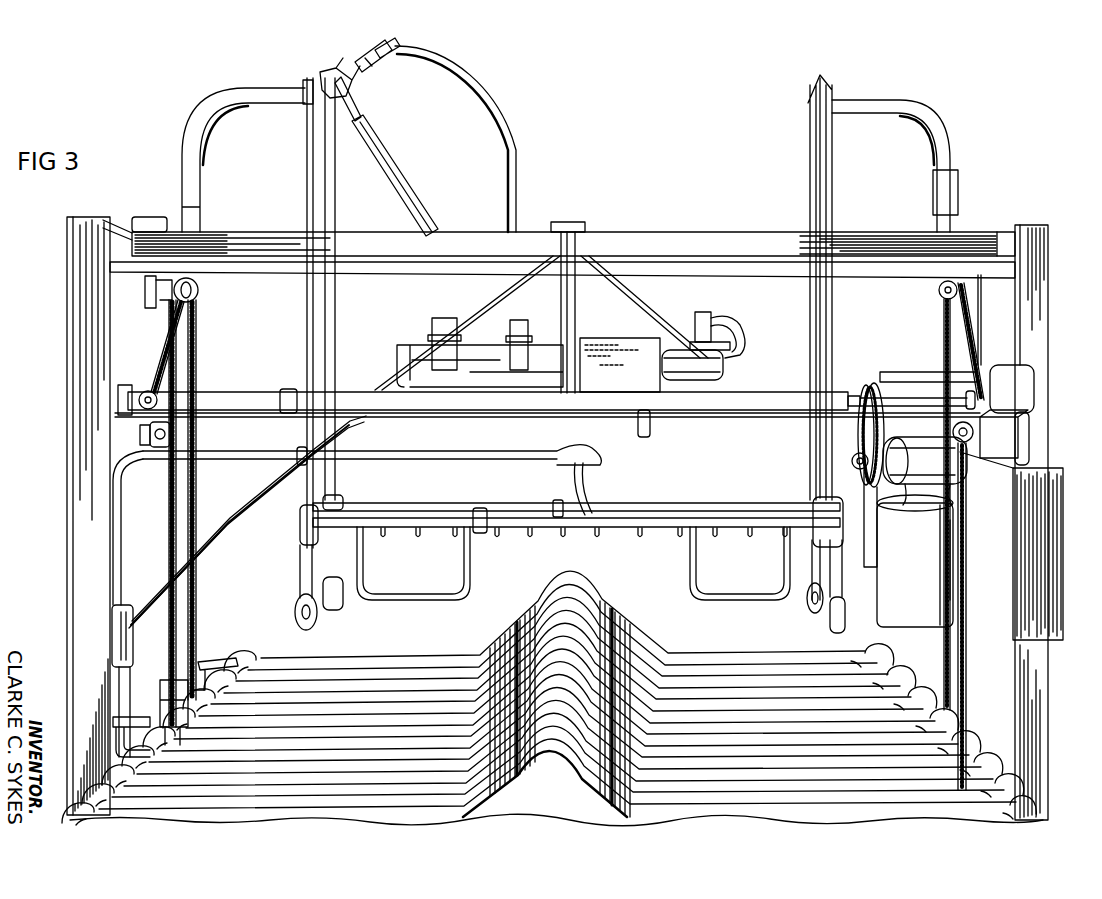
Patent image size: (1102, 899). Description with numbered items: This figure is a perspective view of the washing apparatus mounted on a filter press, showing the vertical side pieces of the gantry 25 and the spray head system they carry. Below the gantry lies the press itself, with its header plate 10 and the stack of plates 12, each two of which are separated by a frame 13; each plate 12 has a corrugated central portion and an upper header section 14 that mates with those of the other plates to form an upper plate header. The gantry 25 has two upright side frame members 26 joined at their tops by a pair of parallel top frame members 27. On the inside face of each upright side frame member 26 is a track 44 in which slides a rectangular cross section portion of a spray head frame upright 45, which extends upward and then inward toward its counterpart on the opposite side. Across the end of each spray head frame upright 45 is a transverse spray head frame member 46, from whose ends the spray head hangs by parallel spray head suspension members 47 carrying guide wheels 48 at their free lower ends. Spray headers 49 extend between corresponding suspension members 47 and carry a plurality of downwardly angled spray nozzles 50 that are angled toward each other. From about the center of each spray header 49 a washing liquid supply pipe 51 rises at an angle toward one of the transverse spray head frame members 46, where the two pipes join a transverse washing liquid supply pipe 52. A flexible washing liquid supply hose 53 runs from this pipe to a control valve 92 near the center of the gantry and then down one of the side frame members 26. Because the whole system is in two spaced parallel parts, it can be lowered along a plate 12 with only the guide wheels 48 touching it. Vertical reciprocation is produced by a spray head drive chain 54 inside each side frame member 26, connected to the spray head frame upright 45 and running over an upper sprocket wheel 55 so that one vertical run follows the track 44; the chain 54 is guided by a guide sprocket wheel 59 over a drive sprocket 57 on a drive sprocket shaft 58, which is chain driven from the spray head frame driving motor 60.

The header plate 10 is at (383, 660).
The plates 12 is at (897, 800).
The frame 13 is at (653, 807).
The upper header section 14 is at (235, 665).
The gantry 25 is at (1030, 225).
The upright side frame members 26 is at (72, 397).
The top frame members 27 is at (997, 268).
The track 44 is at (196, 303).
The spray head frame upright 45 is at (193, 190).
The transverse spray head frame member 46 is at (308, 85).
The spray head suspension members 47 is at (828, 160).
The guide wheels 48 is at (318, 624).
The spray headers 49 is at (645, 507).
The spray nozzles 50 is at (683, 522).
The washing liquid supply pipe 51 is at (400, 197).
The transverse washing liquid supply pipe 52 is at (350, 92).
The flexible washing liquid supply hose 53 is at (500, 158).
The spray head drive chain 54 is at (157, 350).
The upper sprocket wheel 55 is at (198, 288).
The drive sprocket 57 is at (146, 390).
The drive sprocket shaft 58 is at (745, 405).
The guide sprocket wheel 59 is at (172, 432).
The spray head frame driving motor 60 is at (934, 572).
The control valve 92 is at (708, 320).